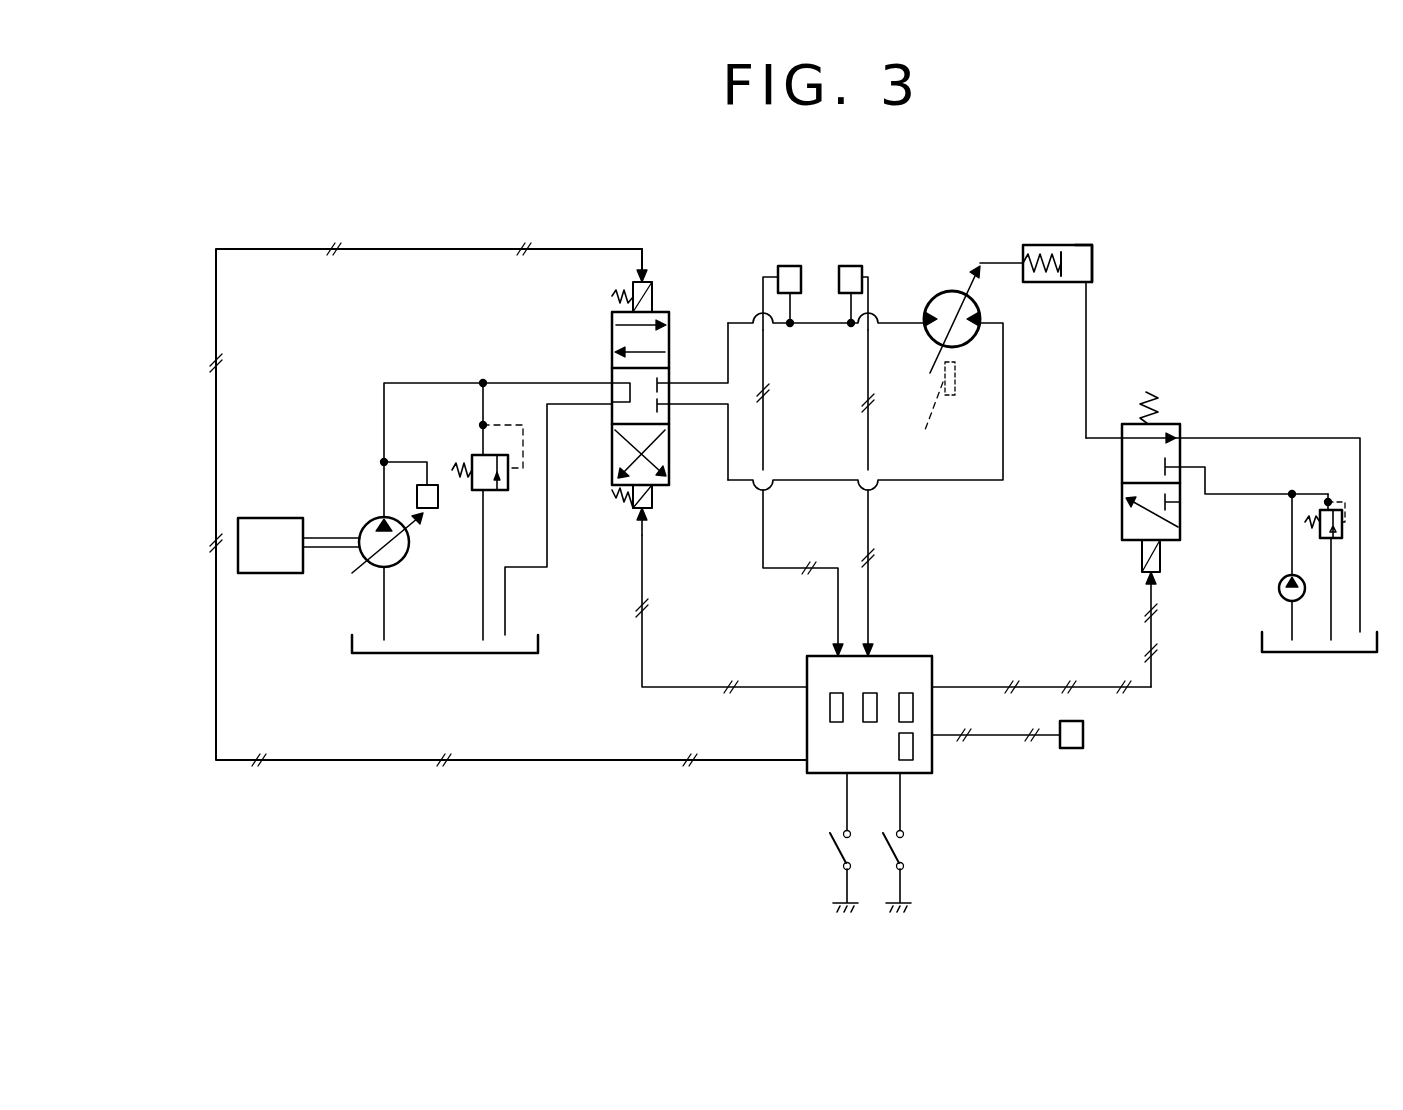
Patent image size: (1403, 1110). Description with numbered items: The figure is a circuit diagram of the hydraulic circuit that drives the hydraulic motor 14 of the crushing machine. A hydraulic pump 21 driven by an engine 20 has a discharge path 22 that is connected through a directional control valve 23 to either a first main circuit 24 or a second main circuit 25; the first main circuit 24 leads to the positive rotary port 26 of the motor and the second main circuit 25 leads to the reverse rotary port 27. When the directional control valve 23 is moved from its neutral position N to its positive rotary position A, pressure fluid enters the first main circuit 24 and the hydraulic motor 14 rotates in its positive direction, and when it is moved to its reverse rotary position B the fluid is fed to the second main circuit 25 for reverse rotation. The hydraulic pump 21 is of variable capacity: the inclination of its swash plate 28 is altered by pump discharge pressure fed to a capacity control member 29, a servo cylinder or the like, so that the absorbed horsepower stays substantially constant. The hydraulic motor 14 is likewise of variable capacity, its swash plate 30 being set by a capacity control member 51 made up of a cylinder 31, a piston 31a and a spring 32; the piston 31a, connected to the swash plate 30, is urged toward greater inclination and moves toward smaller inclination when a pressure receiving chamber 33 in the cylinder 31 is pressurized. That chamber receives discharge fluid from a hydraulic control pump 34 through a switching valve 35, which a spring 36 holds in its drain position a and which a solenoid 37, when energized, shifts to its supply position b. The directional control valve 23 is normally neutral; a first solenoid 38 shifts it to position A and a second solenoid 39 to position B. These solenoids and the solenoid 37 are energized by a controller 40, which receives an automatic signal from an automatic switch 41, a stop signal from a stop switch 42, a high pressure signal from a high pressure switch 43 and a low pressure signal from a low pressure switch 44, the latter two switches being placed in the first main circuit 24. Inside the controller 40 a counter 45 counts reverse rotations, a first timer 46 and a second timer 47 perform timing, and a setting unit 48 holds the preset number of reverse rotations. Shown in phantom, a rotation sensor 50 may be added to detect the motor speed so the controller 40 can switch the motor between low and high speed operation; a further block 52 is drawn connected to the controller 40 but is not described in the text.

The hydraulic motor 14 is at (942, 300).
The engine 20 is at (262, 530).
The hydraulic pump 21 is at (398, 555).
The discharge path 22 is at (384, 414).
The directional control valve 23 is at (635, 373).
The first main circuit 24 is at (728, 323).
The second main circuit 25 is at (732, 480).
The positive rotary port 26 is at (925, 328).
The reverse rotary port 27 is at (1003, 316).
The swash plate 28 is at (420, 520).
The capacity control member 29 is at (432, 484).
The swash plate 30 is at (970, 272).
The cylinder 31 is at (1058, 245).
The piston 31a is at (1063, 279).
The spring 32 is at (1038, 245).
The pressure receiving chamber 33 is at (1092, 262).
The hydraulic control pump 34 is at (1279, 592).
The switching valve 35 is at (1215, 504).
The spring 36 is at (1150, 404).
The solenoid 37 is at (1142, 560).
The first solenoid 38 is at (652, 282).
The second solenoid 39 is at (652, 512).
The controller 40 is at (874, 685).
The automatic switch 41 is at (832, 854).
The stop switch 42 is at (898, 850).
The high pressure switch 43 is at (786, 266).
The low pressure switch 44 is at (856, 266).
The counter 45 is at (830, 712).
The first timer 46 is at (868, 714).
The second timer 47 is at (913, 712).
The setting unit 48 is at (913, 748).
The rotation sensor 50 is at (923, 406).
The capacity control member 51 is at (1078, 245).
The speed sensor 52 is at (1083, 735).
The positive rotary position A is at (612, 346).
The neutral position N is at (612, 428).
The reverse rotary position B is at (612, 468).
The drain position a is at (1122, 466).
The supply position b is at (1122, 522).